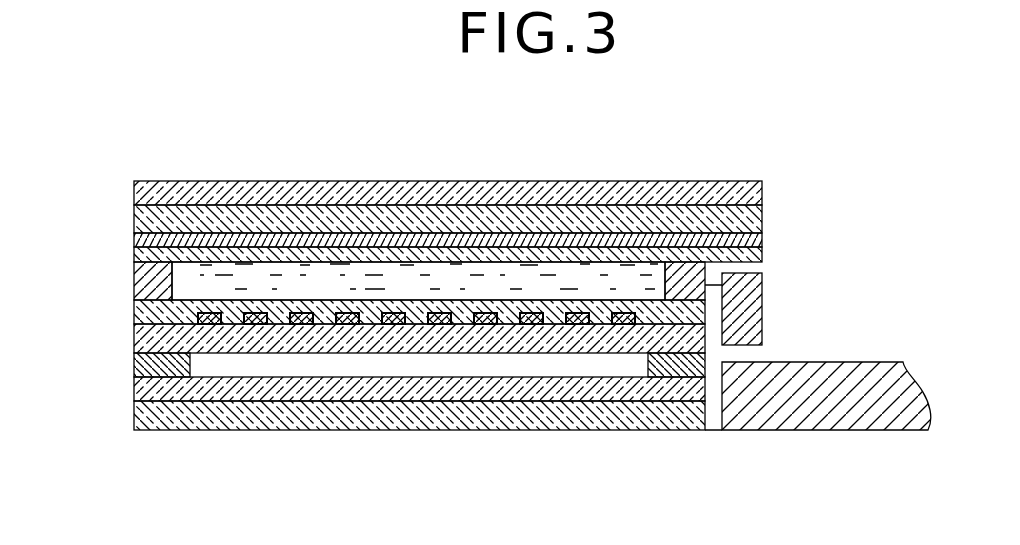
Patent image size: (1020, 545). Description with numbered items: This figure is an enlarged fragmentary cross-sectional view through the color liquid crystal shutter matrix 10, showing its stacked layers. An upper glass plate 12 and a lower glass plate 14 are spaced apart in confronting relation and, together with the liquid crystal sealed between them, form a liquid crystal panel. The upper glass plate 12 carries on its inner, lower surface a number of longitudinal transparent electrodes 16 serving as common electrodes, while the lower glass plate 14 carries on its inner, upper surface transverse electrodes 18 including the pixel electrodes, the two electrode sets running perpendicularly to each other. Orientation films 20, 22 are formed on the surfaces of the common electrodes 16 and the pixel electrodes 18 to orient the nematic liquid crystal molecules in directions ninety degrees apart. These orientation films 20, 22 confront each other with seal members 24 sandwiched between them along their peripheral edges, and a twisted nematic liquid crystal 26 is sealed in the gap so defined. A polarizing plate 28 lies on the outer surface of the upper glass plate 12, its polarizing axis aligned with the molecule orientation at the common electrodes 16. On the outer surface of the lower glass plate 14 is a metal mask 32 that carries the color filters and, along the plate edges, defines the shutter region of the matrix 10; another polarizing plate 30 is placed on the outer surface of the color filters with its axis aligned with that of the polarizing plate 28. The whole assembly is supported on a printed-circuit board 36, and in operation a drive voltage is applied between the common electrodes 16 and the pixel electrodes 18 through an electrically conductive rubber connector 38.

The color liquid crystal shutter matrix 10 is at (594, 105).
The upper glass plate 12 is at (763, 213).
The lower glass plate 14 is at (134, 341).
The longitudinal transparent electrodes 16 is at (763, 238).
The transverse electrodes 18 is at (211, 324).
The orientation film 20 is at (763, 257).
The orientation film 22 is at (134, 312).
The seal members 24 is at (134, 272).
The twisted nematic liquid crystal 26 is at (330, 270).
The polarizing plate 28 is at (628, 187).
The polarizing plate 30 is at (470, 408).
The metal mask 32 is at (134, 372).
The printed-circuit board 36 is at (799, 396).
The electrically conductive rubber connector 38 is at (748, 333).